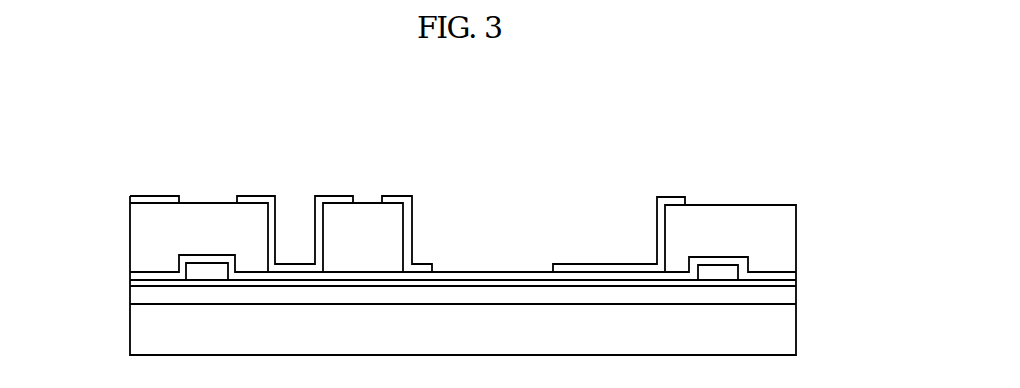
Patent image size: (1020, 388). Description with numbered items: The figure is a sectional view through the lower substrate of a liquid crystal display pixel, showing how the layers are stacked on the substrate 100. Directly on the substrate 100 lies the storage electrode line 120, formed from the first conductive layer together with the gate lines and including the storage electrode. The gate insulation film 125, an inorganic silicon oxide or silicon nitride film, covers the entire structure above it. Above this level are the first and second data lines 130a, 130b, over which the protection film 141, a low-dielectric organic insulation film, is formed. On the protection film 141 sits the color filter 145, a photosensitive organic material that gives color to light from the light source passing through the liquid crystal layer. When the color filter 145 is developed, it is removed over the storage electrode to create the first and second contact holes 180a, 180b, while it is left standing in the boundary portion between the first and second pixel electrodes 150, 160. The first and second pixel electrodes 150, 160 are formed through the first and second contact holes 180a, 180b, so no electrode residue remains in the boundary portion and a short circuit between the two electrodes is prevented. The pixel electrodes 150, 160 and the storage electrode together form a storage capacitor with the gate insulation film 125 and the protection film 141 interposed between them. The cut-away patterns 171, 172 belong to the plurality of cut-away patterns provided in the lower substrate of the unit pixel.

The substrate 100 is at (796, 345).
The storage electrode line 120 is at (796, 305).
The gate insulation film 125 is at (796, 288).
The first data line 130a is at (195, 273).
The second data line 130b is at (730, 271).
The protection film 141 is at (130, 273).
The color filter 145 is at (130, 235).
The first pixel electrode 150 is at (664, 197).
The second pixel electrode 160 is at (262, 196).
The cut-away pattern 171 is at (366, 203).
The cut-away pattern 172 is at (481, 268).
The first contact hole 180a is at (296, 196).
The second contact hole 180b is at (531, 201).